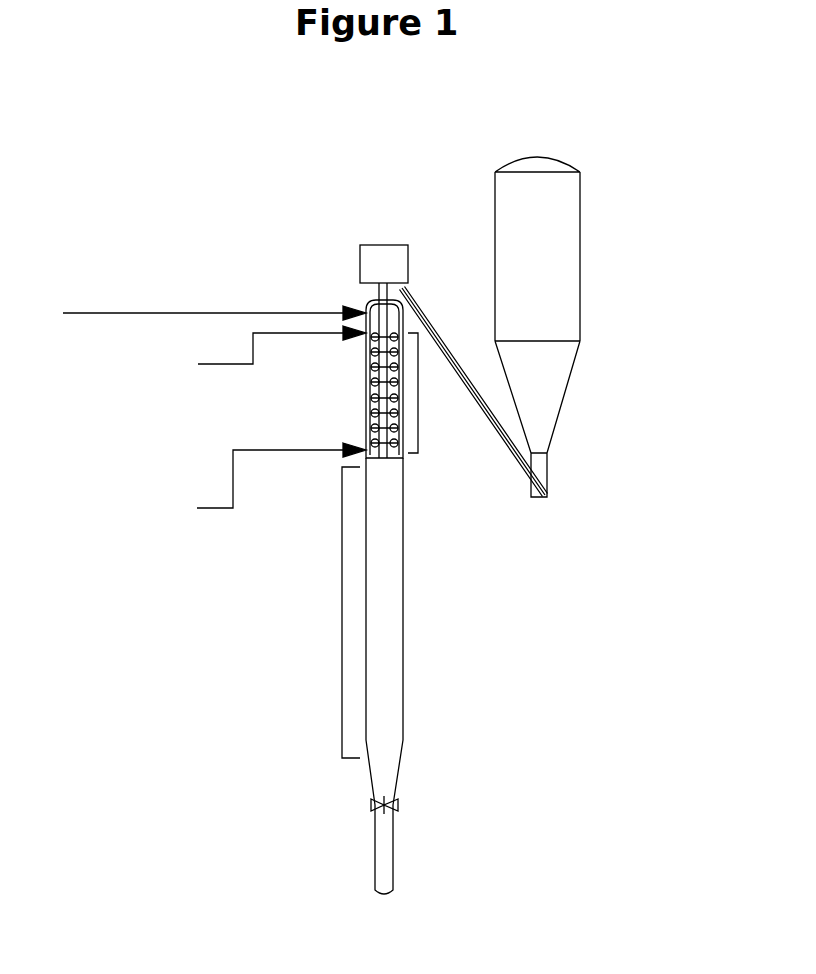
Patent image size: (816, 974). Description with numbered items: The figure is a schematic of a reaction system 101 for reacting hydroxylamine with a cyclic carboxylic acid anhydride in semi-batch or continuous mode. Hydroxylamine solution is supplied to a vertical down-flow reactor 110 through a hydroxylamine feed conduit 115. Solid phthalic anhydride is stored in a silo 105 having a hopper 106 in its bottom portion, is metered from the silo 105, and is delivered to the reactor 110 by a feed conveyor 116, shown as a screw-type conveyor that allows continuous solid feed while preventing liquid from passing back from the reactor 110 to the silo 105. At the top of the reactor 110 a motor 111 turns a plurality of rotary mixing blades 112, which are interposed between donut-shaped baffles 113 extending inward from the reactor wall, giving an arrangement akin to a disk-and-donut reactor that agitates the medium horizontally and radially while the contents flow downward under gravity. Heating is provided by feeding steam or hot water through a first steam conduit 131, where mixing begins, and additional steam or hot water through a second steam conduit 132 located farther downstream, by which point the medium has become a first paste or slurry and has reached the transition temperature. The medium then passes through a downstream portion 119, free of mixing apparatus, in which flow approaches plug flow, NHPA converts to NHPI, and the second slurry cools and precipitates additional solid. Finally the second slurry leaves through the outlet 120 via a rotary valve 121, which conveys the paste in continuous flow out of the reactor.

The system 101 is at (143, 157).
The silo 105 is at (592, 173).
The hopper 106 is at (548, 393).
The down-flow reactor 110 is at (418, 520).
The motor 111 is at (373, 262).
The rotary mixing blades 112 is at (420, 400).
The donut-shaped baffles 113 is at (365, 390).
The hydroxylamine feed conduit 115 is at (214, 303).
The feed conveyor 116 is at (474, 392).
The downstream portion 119 is at (341, 594).
The outlet 120 is at (432, 798).
The rotary valve 121 is at (358, 803).
The first steam conduit 131 is at (282, 345).
The second steam conduit 132 is at (279, 476).